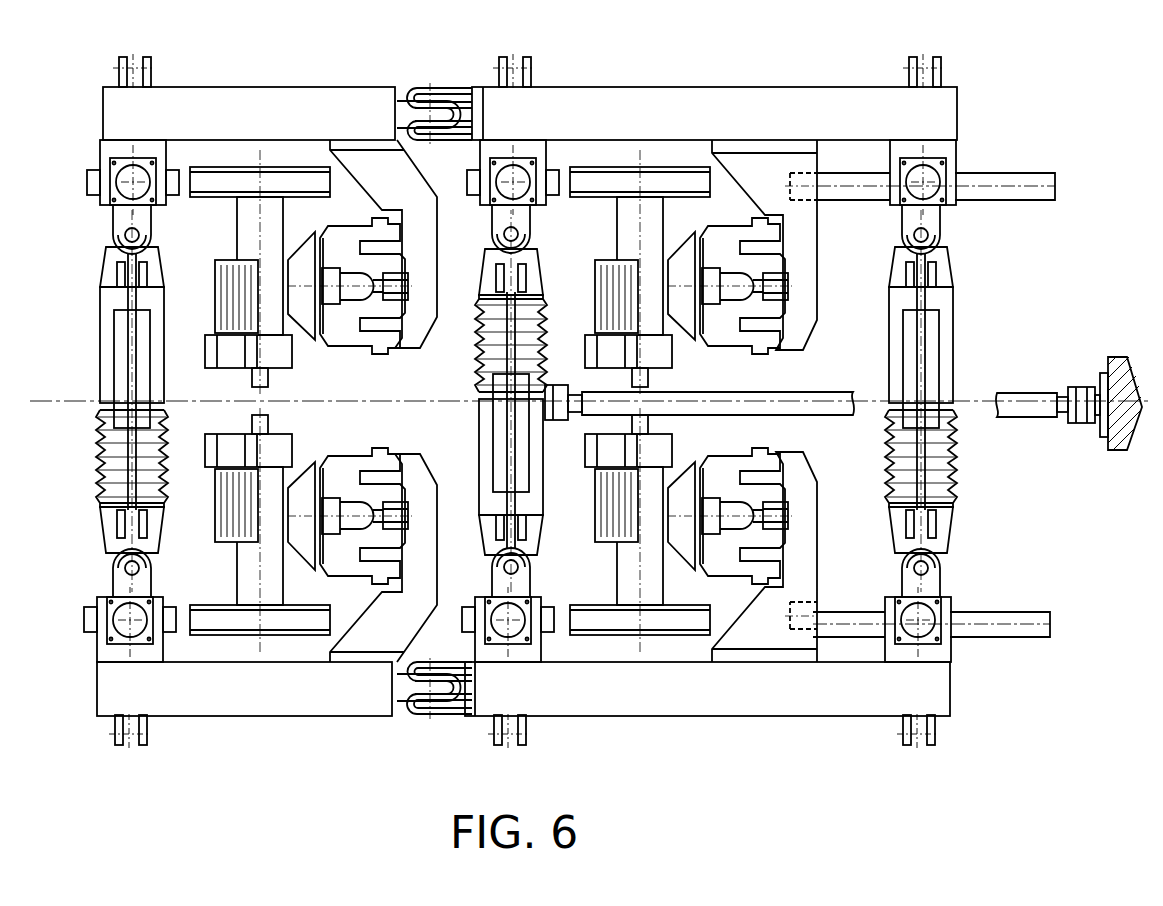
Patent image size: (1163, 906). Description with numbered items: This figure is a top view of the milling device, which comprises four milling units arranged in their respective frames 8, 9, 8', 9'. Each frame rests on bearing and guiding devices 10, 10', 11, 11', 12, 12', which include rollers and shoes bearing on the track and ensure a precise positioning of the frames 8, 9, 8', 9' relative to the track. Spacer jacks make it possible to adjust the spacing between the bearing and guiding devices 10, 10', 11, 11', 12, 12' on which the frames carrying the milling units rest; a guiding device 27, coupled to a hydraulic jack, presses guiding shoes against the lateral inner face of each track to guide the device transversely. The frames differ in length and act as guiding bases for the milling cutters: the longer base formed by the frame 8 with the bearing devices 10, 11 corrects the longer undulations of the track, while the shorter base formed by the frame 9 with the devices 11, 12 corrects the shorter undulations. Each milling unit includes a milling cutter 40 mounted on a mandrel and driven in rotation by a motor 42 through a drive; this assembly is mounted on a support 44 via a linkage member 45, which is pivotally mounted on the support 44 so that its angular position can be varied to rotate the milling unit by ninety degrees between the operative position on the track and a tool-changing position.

The frame 8 is at (707, 717).
The frame 8' is at (714, 89).
The frame 9 is at (244, 716).
The frame 9' is at (249, 89).
The bearing and guiding device 10 is at (932, 656).
The bearing and guiding device 10' is at (945, 162).
The bearing and guiding device 11 is at (529, 613).
The bearing and guiding device 11' is at (531, 126).
The bearing and guiding device 12 is at (110, 613).
The bearing and guiding device 12' is at (154, 126).
The guiding device 27 is at (943, 384).
The milling cutter 40 is at (220, 623).
The motor 42 is at (228, 488).
The support 44 is at (333, 553).
The linkage member 45 is at (298, 493).